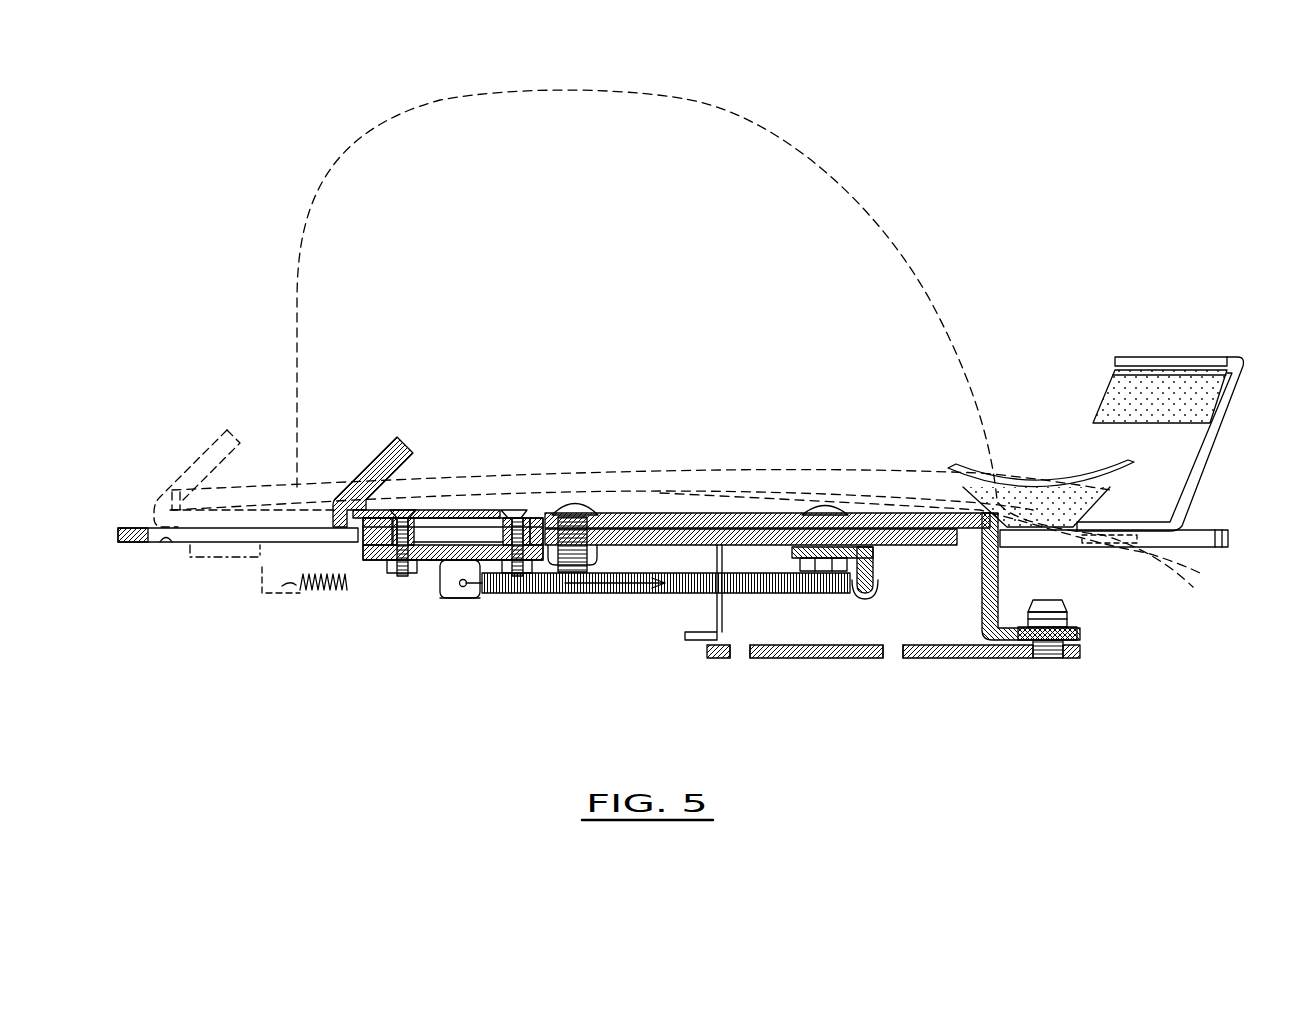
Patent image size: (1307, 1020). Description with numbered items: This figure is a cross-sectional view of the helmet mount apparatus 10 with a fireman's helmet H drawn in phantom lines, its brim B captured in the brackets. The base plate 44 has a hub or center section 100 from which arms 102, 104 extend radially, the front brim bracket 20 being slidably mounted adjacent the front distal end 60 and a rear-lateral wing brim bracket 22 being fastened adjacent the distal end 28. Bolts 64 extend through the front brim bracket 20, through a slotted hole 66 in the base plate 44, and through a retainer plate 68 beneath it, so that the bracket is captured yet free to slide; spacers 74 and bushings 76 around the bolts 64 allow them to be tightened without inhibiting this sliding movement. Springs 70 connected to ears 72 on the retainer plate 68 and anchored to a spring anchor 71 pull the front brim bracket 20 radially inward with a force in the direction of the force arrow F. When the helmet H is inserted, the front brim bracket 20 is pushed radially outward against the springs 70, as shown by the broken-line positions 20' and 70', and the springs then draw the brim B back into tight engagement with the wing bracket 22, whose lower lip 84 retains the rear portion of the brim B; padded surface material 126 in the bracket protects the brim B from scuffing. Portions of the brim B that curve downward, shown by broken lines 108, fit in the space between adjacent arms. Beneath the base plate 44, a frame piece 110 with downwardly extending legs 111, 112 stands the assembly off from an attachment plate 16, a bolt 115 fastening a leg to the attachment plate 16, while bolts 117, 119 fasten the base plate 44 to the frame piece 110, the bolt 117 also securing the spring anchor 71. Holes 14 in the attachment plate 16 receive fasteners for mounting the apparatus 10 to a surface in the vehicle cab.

The helmet mount apparatus 10 is at (158, 363).
The holes 14 is at (740, 660).
The attachment plate 16 is at (950, 660).
The front brim bracket 20 is at (313, 434).
The front brim bracket in radially outward position 20' is at (220, 459).
The rear-lateral wing brim bracket 22 is at (1214, 452).
The distal end of base plate 28 is at (1232, 538).
The base plate 44 is at (898, 547).
The front distal end 60 is at (118, 532).
The bolts 64 is at (393, 578).
The slotted hole 66 is at (168, 547).
The retainer plate 68 is at (432, 562).
The springs 70 is at (666, 604).
The spring in extended position 70' is at (293, 611).
The spring anchor 71 is at (875, 572).
The ears 72 is at (452, 600).
The spacers 74 is at (378, 542).
The bushings 76 is at (420, 517).
The lower lip 84 is at (1020, 470).
The hub or center section 100 is at (690, 546).
The arm 102 is at (242, 558).
The arm 104 is at (1055, 548).
The broken lines showing downwardly extending brim portion 108 is at (1165, 574).
The frame piece 110 is at (678, 513).
The leg 111 is at (716, 612).
The leg 112 is at (999, 582).
The bolt 115 is at (1060, 603).
The bolt 117 is at (836, 500).
The bolt 119 is at (586, 500).
The padded surface material 126 is at (1183, 410).
The brim B is at (279, 488).
The force arrow F is at (618, 596).
The fireman's helmet H is at (797, 136).